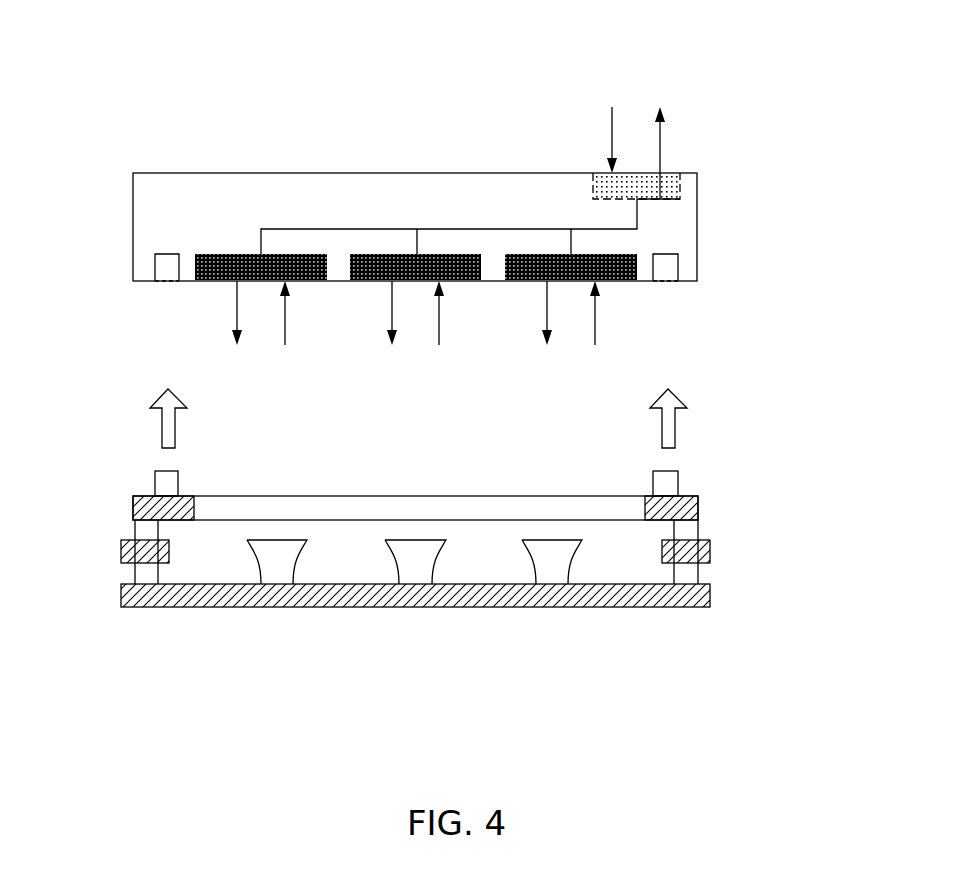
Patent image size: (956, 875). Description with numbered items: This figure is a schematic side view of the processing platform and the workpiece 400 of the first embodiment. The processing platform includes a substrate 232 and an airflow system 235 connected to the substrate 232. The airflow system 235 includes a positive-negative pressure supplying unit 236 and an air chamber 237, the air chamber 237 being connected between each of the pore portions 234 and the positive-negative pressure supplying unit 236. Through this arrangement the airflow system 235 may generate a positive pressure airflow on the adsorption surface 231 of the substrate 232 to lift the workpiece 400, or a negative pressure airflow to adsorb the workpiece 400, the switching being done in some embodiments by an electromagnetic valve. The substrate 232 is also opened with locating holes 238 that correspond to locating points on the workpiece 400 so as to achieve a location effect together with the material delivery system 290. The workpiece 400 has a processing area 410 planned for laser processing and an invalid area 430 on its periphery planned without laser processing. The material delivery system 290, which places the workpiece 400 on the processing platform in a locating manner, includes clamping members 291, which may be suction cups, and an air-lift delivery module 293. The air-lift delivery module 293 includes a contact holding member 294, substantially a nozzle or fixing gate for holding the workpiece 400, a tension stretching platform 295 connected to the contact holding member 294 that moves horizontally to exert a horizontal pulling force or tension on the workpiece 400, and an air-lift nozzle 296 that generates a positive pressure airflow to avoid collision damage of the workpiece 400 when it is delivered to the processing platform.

The adsorption surface 231 is at (132, 287).
The substrate 232 is at (280, 173).
The pore portions 234 is at (210, 254).
The airflow system 235 is at (538, 106).
The positive-negative pressure supplying unit 236 is at (583, 173).
The air chamber 237 is at (497, 173).
The locating holes 238 is at (167, 281).
The material delivery system 290 is at (450, 579).
The clamping members 291 is at (153, 487).
The air-lift delivery module 293 is at (434, 645).
The contact holding member 294 is at (675, 573).
The tension stretching platform 295 is at (662, 550).
The air-lift nozzle 296 is at (548, 577).
The workpiece 400 is at (415, 464).
The processing area 410 is at (575, 496).
The invalid area 430 is at (643, 508).